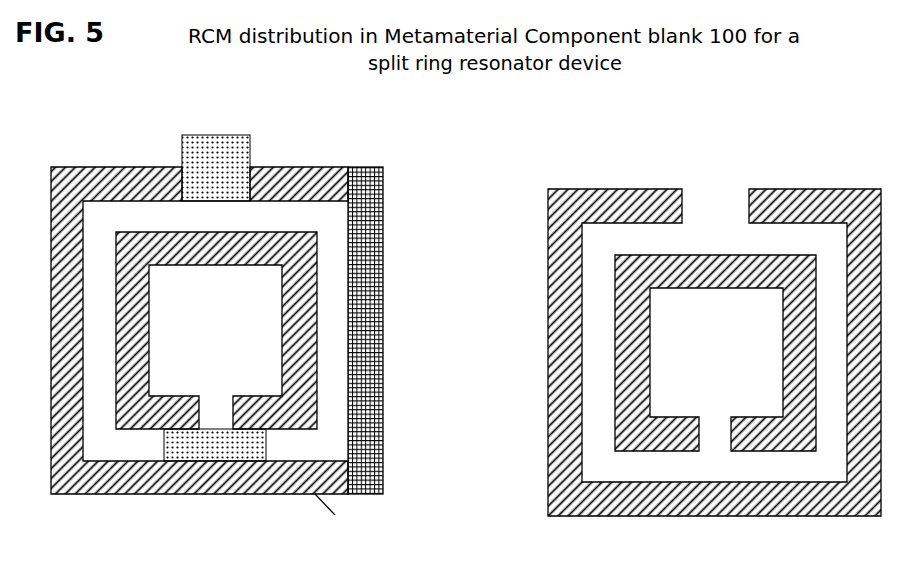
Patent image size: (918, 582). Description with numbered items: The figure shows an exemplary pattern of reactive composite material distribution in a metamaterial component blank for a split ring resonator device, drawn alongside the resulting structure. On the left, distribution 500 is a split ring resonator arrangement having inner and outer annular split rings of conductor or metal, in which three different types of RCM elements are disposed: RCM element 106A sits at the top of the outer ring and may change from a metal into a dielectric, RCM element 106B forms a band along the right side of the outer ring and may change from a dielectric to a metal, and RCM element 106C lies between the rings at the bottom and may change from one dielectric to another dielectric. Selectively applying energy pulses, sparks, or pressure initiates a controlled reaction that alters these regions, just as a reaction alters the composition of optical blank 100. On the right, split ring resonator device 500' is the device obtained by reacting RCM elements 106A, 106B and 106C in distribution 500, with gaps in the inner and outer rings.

The metamaterial component device 500 is at (260, 333).
The split ring resonator device 500' is at (714, 318).
The optical blank 100 is at (257, 367).
The RCM element 106A is at (249, 148).
The RCM element 106B is at (383, 310).
The RCM element 106C is at (198, 455).